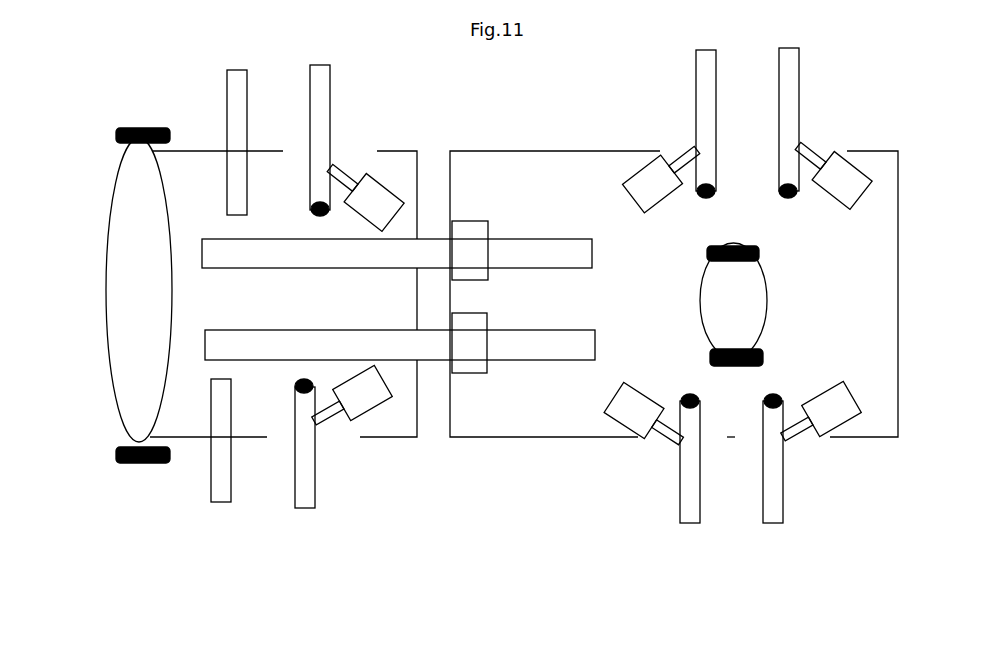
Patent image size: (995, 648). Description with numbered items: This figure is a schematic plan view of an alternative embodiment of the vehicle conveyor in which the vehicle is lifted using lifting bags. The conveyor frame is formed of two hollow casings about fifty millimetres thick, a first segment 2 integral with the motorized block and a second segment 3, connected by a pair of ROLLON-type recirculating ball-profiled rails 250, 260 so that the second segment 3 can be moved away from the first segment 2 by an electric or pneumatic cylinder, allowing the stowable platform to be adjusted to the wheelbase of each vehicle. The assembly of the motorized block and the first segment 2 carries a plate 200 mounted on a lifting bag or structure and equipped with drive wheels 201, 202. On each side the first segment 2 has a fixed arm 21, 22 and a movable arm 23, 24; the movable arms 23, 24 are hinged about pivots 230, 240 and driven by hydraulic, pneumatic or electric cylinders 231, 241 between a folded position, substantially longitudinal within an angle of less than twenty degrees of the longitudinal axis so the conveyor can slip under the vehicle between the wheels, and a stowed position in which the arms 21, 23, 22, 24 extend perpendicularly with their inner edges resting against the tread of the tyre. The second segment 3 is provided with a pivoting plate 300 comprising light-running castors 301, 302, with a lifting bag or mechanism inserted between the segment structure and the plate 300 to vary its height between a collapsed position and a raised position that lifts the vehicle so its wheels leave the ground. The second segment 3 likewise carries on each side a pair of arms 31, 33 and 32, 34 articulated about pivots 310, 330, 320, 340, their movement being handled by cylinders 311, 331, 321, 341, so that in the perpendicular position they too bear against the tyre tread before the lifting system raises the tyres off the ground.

The first segment 2 is at (298, 330).
The second segment 3 is at (674, 331).
The fixed arm 21 is at (192, 140).
The fixed arm 22 is at (203, 480).
The movable arm 23 is at (272, 137).
The movable arm 24 is at (283, 486).
The plate 200 is at (120, 290).
The drive wheel 201 is at (106, 117).
The drive wheel 202 is at (121, 491).
The pivot 230 is at (286, 166).
The cylinder 231 is at (363, 172).
The pivot 240 is at (284, 428).
The cylinder 241 is at (357, 407).
The recirculating ball-profiled rail 250 is at (412, 261).
The recirculating ball-profiled rail 260 is at (380, 351).
The pivoting plate 300 is at (829, 300).
The light-running castor 301 is at (833, 257).
The light-running castor 302 is at (834, 369).
The arm 31 is at (657, 120).
The arm 32 is at (671, 501).
The arm 33 is at (745, 95).
The arm 34 is at (751, 499).
The pivot 310 is at (726, 141).
The cylinder 311 is at (634, 162).
The pivot 320 is at (637, 446).
The cylinder 321 is at (715, 457).
The pivot 330 is at (865, 204).
The cylinder 331 is at (865, 165).
The pivot 340 is at (829, 484).
The cylinder 341 is at (885, 421).